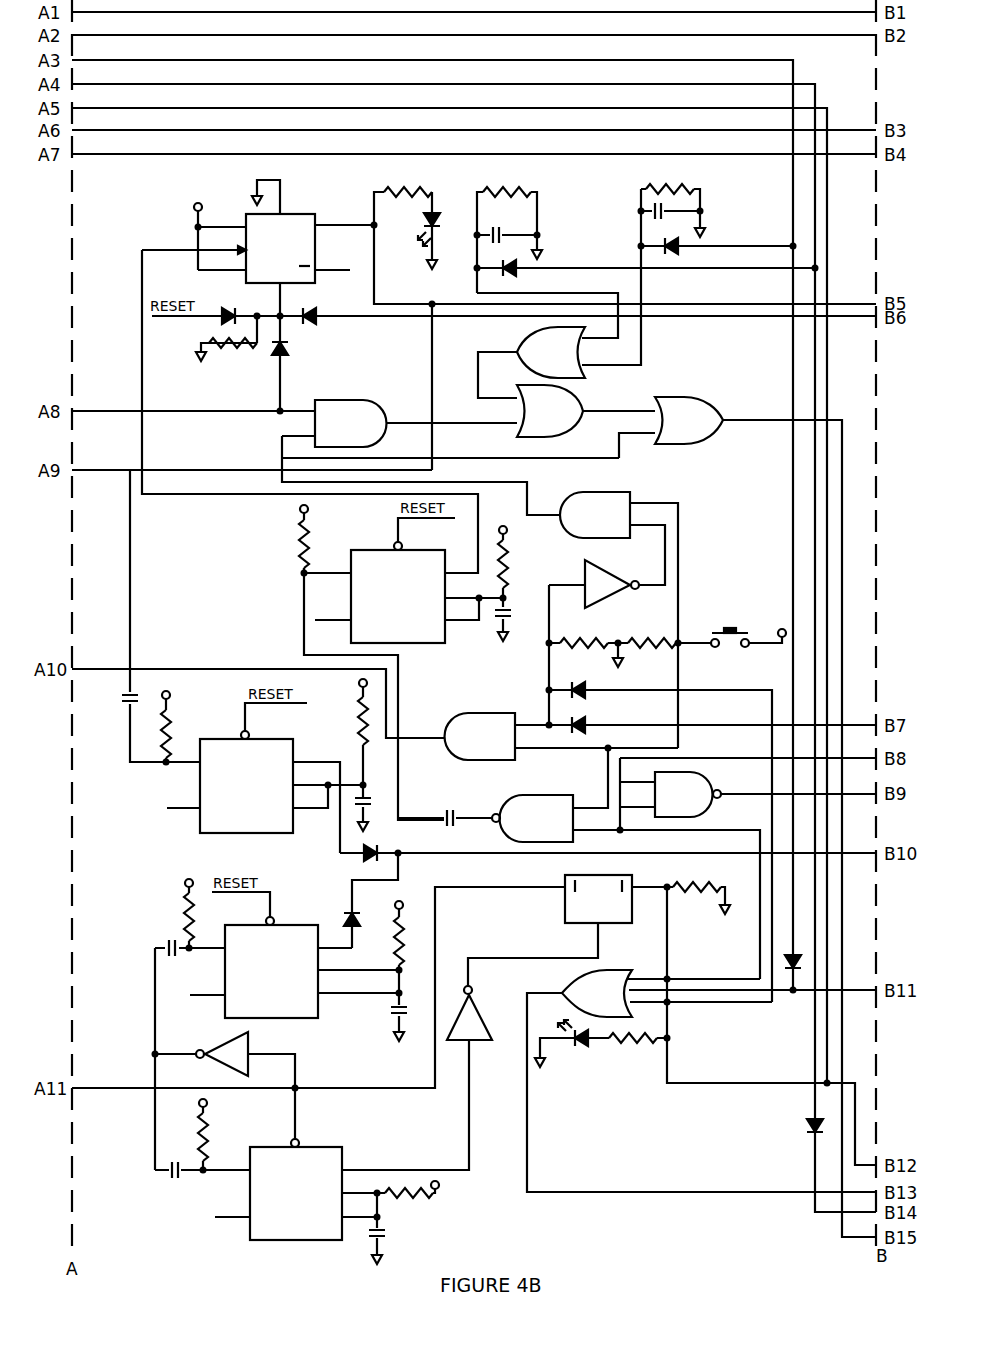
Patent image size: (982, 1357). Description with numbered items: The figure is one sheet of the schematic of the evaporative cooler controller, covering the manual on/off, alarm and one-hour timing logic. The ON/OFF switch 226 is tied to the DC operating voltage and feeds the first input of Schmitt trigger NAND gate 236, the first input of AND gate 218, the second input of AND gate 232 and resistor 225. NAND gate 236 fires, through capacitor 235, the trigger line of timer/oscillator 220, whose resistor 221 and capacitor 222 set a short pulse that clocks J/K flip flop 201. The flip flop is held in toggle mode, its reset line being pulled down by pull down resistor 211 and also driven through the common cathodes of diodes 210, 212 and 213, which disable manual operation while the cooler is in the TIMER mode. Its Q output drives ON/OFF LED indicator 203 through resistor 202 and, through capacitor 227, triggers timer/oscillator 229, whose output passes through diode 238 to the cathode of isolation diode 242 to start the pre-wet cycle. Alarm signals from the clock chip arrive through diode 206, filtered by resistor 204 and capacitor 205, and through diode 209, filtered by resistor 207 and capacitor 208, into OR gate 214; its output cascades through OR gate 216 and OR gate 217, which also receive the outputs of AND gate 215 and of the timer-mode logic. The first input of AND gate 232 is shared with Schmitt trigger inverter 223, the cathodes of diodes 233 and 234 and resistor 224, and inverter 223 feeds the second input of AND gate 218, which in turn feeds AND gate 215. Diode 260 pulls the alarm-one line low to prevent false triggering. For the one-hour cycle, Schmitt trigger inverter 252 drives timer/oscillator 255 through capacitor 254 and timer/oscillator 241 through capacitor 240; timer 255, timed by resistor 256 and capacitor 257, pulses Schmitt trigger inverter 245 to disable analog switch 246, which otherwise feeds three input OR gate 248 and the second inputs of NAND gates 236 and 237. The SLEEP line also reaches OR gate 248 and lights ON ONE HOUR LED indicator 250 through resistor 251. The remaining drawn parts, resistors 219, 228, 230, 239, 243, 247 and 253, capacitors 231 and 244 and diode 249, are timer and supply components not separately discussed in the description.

The J/K flip flop 201 is at (284, 239).
The resistor 202 is at (403, 197).
The ON/OFF LED indicator 203 is at (444, 236).
The resistor 204 is at (507, 231).
The capacitor 205 is at (507, 224).
The diode 206 is at (646, 276).
The resistor 207 is at (670, 196).
The capacitor 208 is at (670, 207).
The diode 209 is at (717, 253).
The diode 210 is at (226, 304).
The pull down resistor 211 is at (233, 350).
The diode 212 is at (328, 310).
The diode 213 is at (295, 359).
The OR gate 214 is at (569, 354).
The AND gate 215 is at (351, 412).
The OR gate 216 is at (550, 419).
The OR gate 217 is at (689, 410).
The AND gate 218 is at (597, 506).
The resistor 219 is at (320, 543).
The timer/oscillator 220 is at (398, 608).
The resistor 221 is at (519, 570).
The capacitor 222 is at (519, 625).
The Schmitt trigger inverter 223 is at (612, 589).
The resistor 224 is at (583, 634).
The resistor 225 is at (648, 639).
The ON/OFF switch 226 is at (731, 648).
The capacitor 227 is at (114, 711).
The resistor 228 is at (182, 730).
The timer/oscillator 229 is at (246, 798).
The resistor 230 is at (347, 742).
The capacitor 231 is at (377, 802).
The AND gate 232 is at (480, 748).
The diode 233 is at (596, 684).
The diode 234 is at (596, 720).
The capacitor 235 is at (445, 829).
The Schmitt trigger NAND gate 236 is at (536, 809).
The Schmitt trigger NAND gate 237 is at (705, 796).
The diode 238 is at (350, 860).
The resistor 239 is at (174, 917).
The capacitor 240 is at (175, 959).
The timer/oscillator 241 is at (274, 984).
The isolation diode 242 is at (336, 908).
The resistor 243 is at (383, 957).
The capacitor 244 is at (384, 1012).
The Schmitt trigger inverter 245 is at (476, 1029).
The analog switch 246 is at (597, 889).
The resistor 247 is at (699, 899).
The three input OR gate 248 is at (598, 984).
The diode 249 is at (795, 985).
The ON ONE HOUR LED indicator 250 is at (567, 1050).
The resistor 251 is at (636, 1048).
The Schmitt trigger inverter 252 is at (211, 1056).
The resistor 253 is at (221, 1138).
The capacitor 254 is at (173, 1183).
The timer/oscillator 255 is at (296, 1205).
The resistor 256 is at (409, 1204).
The capacitor 257 is at (398, 1235).
The diode 260 is at (795, 1126).